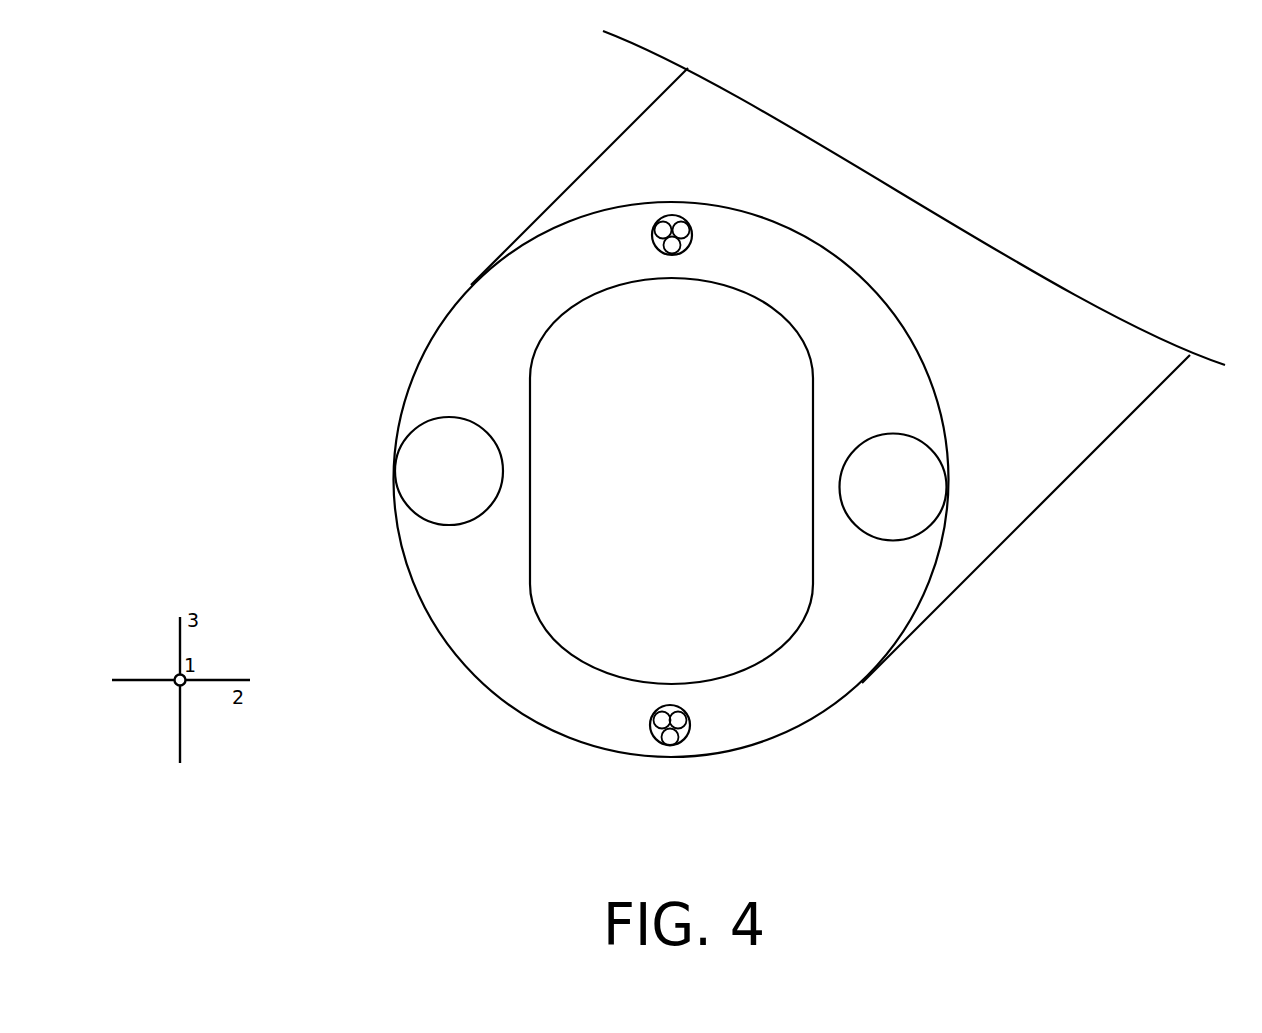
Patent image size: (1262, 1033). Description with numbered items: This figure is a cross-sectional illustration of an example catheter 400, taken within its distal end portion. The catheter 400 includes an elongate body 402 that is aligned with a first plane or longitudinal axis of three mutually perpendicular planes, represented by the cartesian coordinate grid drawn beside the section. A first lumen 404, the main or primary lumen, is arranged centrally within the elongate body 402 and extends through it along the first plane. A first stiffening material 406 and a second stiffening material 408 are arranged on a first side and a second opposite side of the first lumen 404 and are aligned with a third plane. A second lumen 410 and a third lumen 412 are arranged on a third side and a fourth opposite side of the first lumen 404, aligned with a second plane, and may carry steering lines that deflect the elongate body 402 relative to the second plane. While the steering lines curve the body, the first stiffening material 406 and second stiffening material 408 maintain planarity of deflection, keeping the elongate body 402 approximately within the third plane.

The catheter 400 is at (336, 192).
The elongate body 402 is at (1110, 373).
The first lumen 404 is at (780, 642).
The first stiffening material 406 is at (669, 216).
The second stiffening material 408 is at (655, 731).
The second lumen 410 is at (448, 474).
The third lumen 412 is at (906, 489).